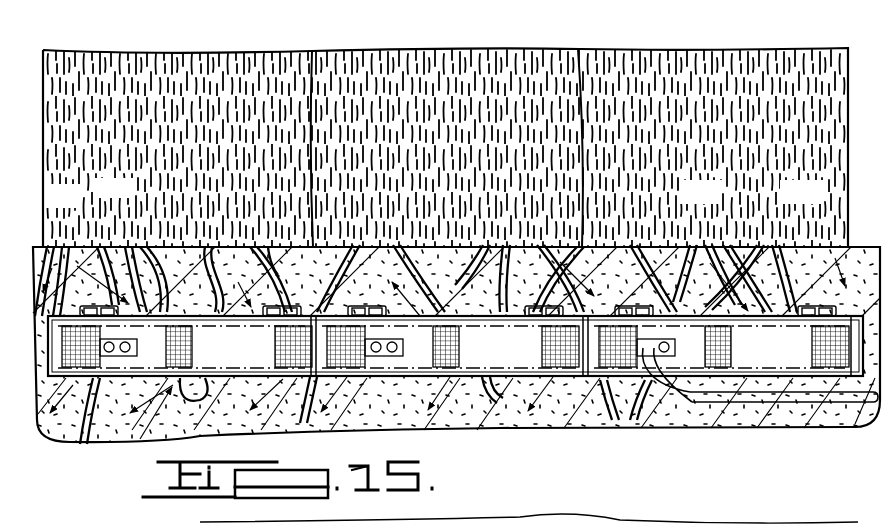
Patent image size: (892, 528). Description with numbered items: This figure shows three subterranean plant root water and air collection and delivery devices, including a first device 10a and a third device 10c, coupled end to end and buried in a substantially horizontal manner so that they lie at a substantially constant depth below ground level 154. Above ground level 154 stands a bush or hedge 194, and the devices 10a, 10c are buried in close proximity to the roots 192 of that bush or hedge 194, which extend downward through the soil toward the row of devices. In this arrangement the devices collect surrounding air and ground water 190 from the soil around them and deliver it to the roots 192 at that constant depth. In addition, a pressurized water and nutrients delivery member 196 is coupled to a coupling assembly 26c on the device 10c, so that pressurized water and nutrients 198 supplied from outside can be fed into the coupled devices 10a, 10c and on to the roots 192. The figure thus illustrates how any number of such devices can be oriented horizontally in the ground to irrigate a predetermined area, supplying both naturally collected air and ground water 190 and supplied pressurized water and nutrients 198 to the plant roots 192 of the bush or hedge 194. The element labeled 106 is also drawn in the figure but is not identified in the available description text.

The bush or hedge 194 is at (383, 75).
The ground level 154 is at (72, 244).
The surrounding air and ground water 190 is at (126, 246).
The roots 192 is at (782, 246).
The subterranean plant root water and air collection and delivery device 10a is at (128, 380).
The subterranean plant root water and air collection and delivery device 10c is at (772, 388).
The water outlet 106 is at (518, 382).
The coupling assembly 26c is at (640, 378).
The pressurized water and nutrients 198 is at (673, 398).
The pressurized water and nutrients delivery member 196 is at (744, 408).